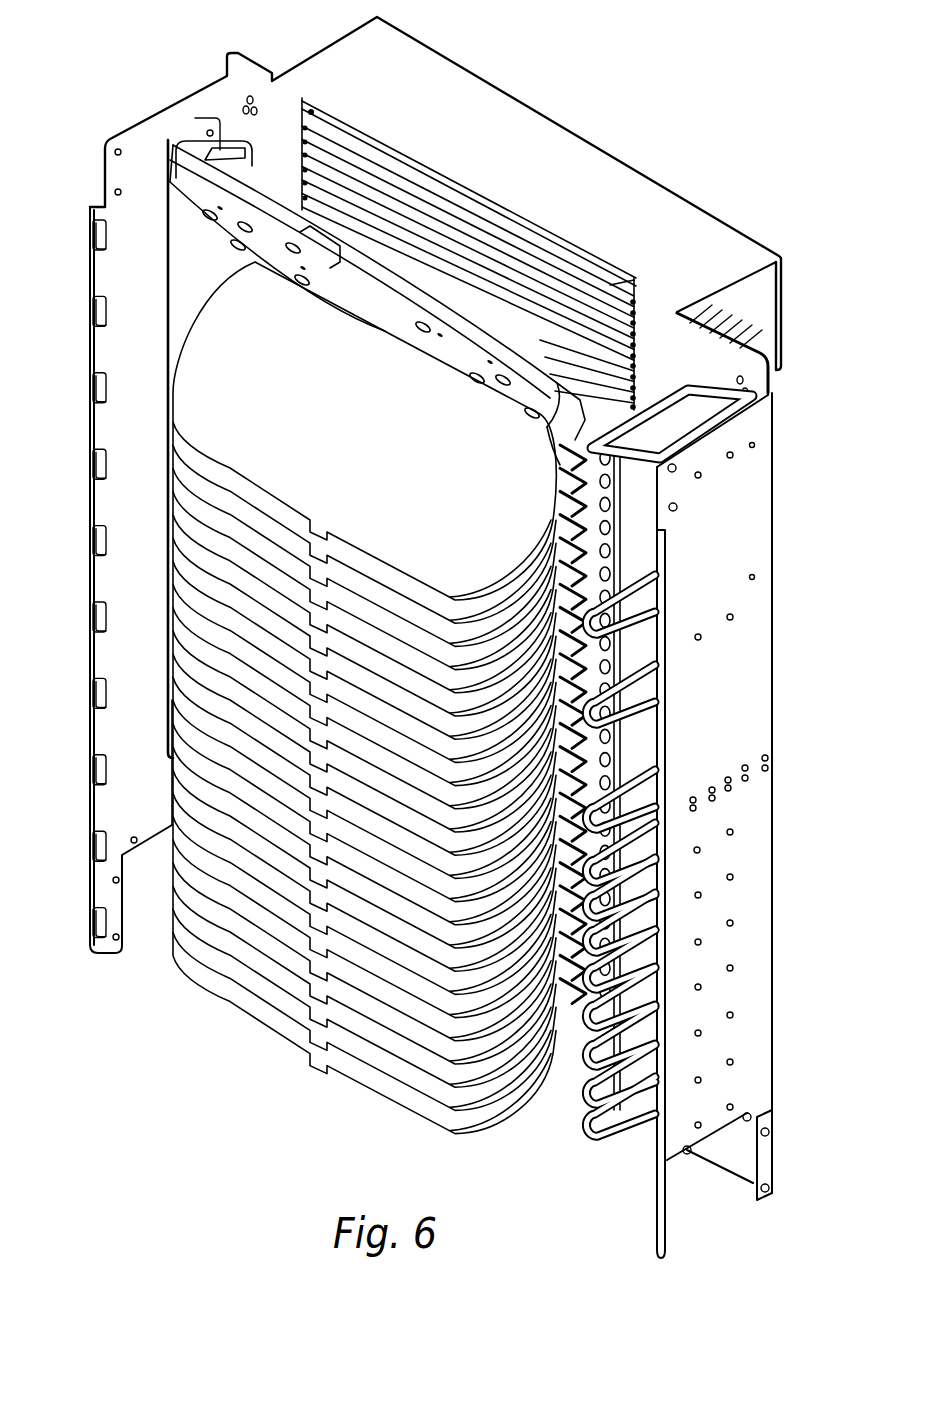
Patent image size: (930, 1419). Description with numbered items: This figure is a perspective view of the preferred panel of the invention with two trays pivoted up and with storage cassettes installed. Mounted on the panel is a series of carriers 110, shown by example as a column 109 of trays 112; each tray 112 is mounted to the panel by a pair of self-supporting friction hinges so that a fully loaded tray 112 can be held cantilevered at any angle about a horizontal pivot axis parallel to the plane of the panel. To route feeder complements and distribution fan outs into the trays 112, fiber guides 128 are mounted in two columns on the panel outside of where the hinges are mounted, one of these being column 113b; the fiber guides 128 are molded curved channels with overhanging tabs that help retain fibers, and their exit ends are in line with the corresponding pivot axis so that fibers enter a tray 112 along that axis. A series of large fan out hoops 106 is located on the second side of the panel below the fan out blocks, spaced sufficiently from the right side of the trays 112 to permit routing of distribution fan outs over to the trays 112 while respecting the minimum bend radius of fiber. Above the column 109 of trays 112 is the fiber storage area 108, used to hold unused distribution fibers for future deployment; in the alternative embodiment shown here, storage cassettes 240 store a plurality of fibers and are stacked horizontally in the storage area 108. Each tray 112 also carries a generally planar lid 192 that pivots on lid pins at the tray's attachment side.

The fan out hoops 106 is at (660, 950).
The fiber storage area 108 is at (317, 107).
The column of trays 109 is at (275, 1036).
The carriers 110 is at (187, 150).
The tray 112 is at (346, 626).
The column of fiber guides 113b is at (577, 412).
The fiber guides 128 is at (655, 407).
The lid 192 is at (180, 388).
The storage cassettes 240 is at (600, 277).